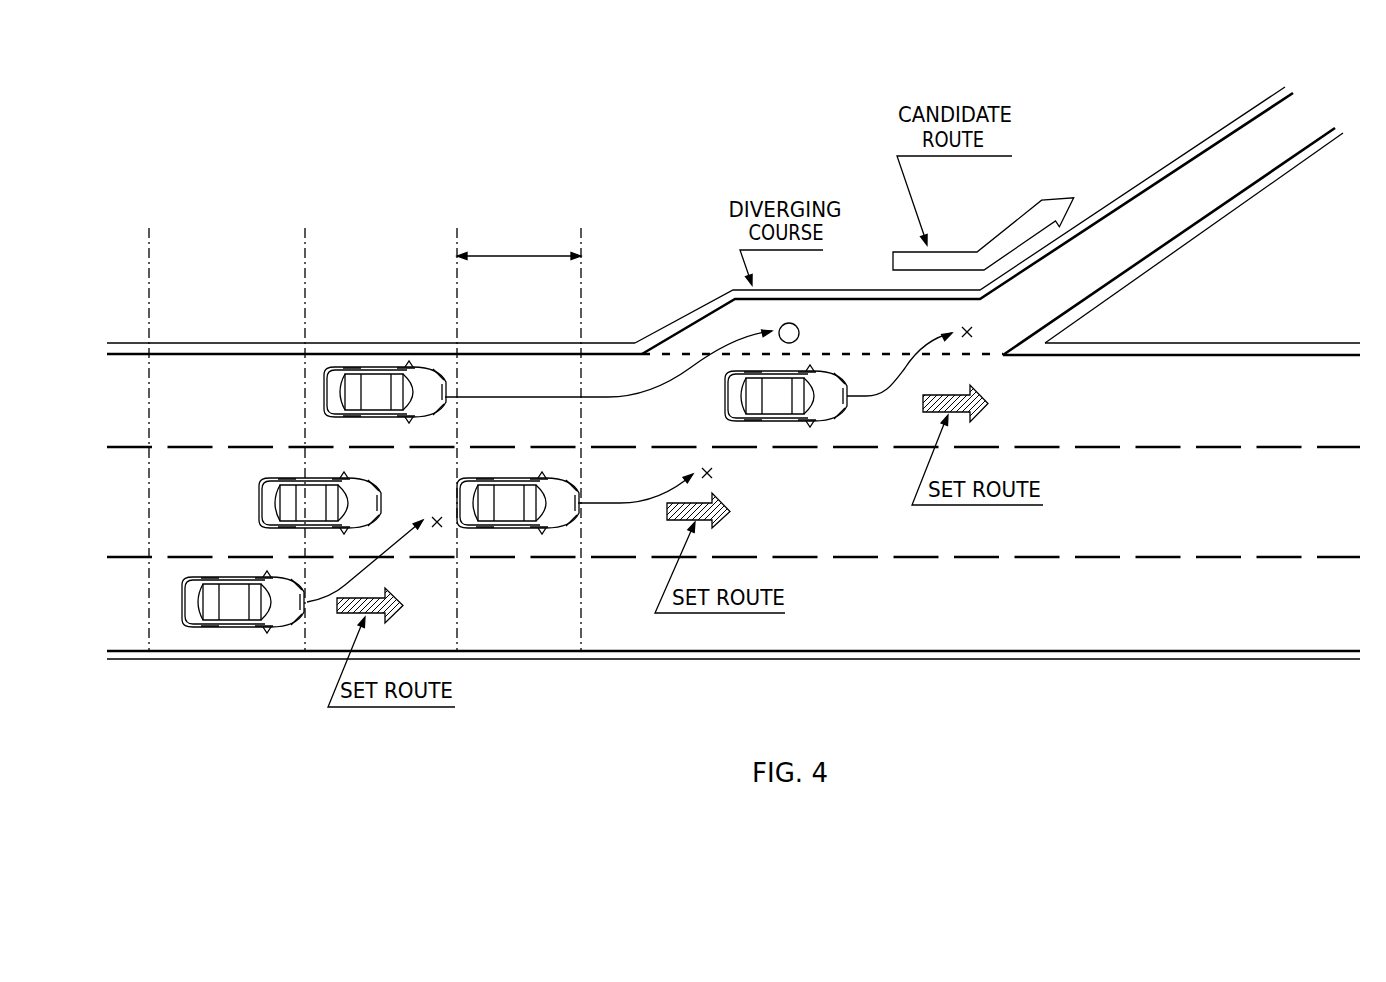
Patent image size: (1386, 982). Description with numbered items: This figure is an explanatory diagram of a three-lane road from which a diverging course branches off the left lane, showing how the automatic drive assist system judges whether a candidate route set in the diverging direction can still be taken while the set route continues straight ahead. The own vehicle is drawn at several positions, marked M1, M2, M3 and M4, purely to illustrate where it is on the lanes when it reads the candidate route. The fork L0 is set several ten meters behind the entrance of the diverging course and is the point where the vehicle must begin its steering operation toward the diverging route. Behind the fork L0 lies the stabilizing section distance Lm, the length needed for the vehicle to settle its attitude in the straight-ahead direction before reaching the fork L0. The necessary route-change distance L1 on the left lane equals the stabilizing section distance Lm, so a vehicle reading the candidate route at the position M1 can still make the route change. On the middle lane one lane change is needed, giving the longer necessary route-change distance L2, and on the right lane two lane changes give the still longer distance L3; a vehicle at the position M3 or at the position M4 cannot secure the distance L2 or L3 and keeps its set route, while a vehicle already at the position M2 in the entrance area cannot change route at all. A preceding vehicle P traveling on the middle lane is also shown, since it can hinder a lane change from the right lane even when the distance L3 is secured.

The own vehicle position on left lane M1 is at (384, 368).
The own vehicle position in entrance area of diverging course M2 is at (813, 422).
The own vehicle position on middle lane M3 is at (518, 528).
The own vehicle position on right lane M4 is at (243, 627).
The preceding vehicle P is at (285, 479).
The fork L0 is at (580, 430).
The necessary route-change distance on left lane L1 is at (456, 430).
The necessary route-change distance on middle lane L2 is at (304, 430).
The necessary route-change distance on right lane L3 is at (148, 430).
The stabilizing section distance Lm is at (519, 245).